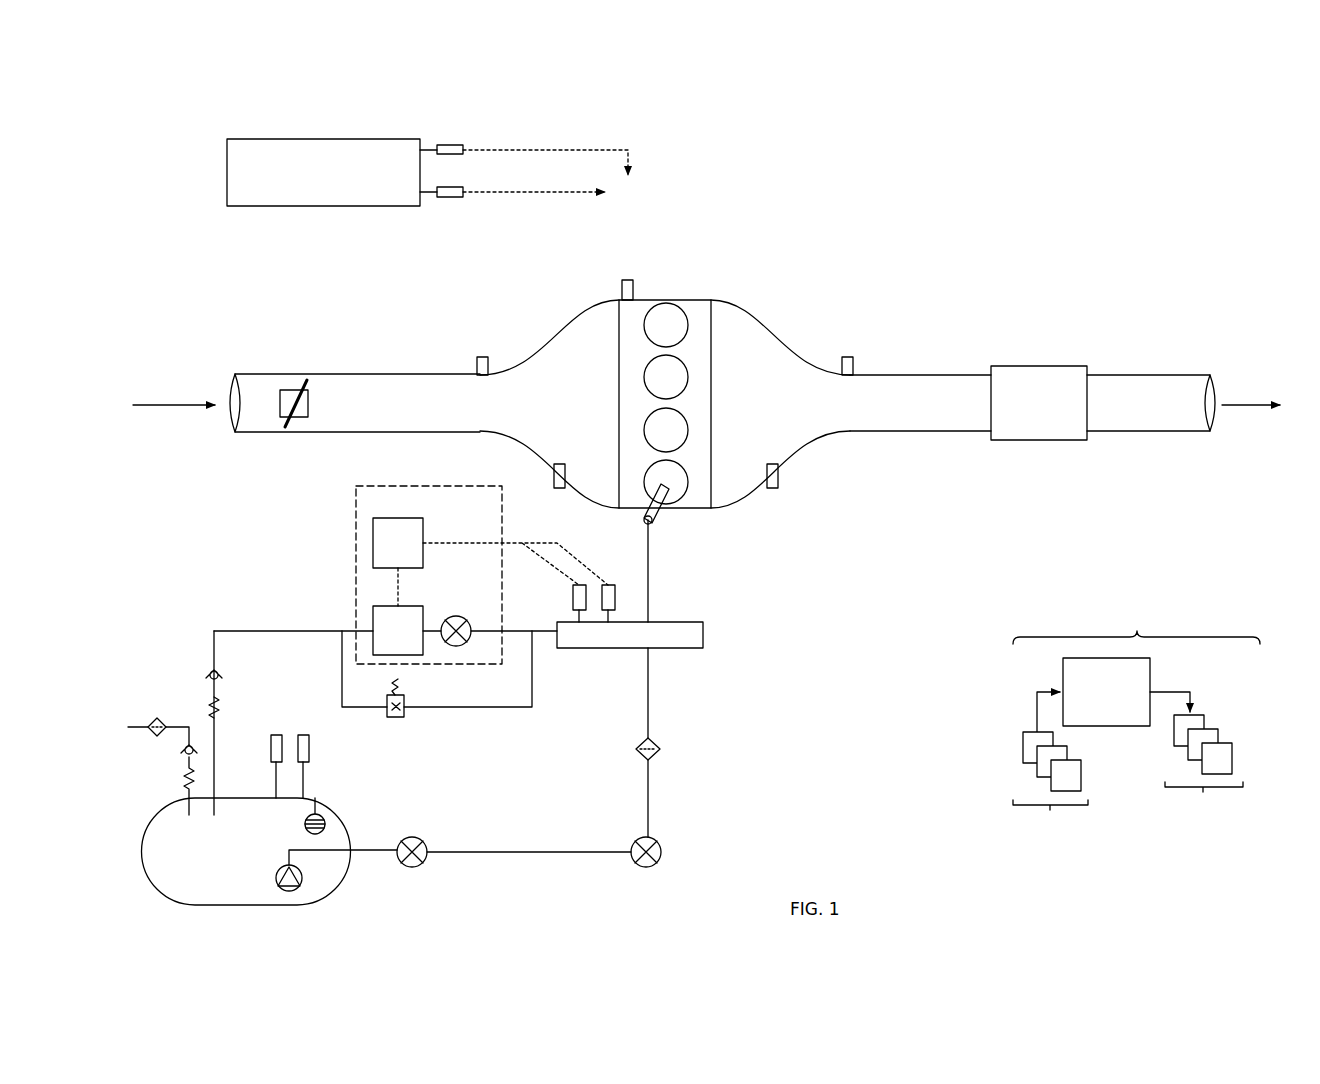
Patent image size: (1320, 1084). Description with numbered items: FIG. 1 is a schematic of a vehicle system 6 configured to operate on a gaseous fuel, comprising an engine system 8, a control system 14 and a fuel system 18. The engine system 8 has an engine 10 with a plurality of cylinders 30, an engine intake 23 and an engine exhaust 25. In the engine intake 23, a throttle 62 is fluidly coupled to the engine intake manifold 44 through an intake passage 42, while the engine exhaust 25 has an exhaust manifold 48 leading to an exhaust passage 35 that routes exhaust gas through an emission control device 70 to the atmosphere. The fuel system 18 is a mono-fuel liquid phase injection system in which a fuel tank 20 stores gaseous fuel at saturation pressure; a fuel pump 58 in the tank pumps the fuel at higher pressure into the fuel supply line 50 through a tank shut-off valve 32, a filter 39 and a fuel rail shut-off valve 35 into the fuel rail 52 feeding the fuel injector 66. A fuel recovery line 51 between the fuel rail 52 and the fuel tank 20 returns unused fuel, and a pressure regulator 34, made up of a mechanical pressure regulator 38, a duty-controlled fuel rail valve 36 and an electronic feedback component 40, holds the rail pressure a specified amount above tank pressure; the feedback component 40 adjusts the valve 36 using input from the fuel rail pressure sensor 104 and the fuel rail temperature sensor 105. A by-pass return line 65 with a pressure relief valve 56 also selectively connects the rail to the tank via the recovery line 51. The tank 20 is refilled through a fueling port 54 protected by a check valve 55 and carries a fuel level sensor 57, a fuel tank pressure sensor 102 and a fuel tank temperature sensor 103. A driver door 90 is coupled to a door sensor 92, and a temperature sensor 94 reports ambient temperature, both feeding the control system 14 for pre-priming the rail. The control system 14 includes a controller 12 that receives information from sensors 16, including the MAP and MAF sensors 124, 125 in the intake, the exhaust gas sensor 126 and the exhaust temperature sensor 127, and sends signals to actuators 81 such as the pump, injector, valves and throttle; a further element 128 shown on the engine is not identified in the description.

The vehicle system 6 is at (120, 148).
The engine system 8 is at (790, 288).
The engine 10 is at (712, 386).
The controller 12 is at (1106, 692).
The control system 14 is at (1136, 616).
The sensors 16 is at (1050, 772).
The fuel system 18 is at (162, 592).
The fuel tank 20 is at (318, 900).
The engine intake 23 is at (435, 362).
The engine exhaust 25 is at (1052, 318).
The cylinders 30 is at (686, 323).
The tank shut-off valve 32 is at (408, 840).
The pressure regulator 34 is at (412, 486).
The fuel rail shut-off valve 35 is at (1162, 375).
The fuel rail valve 36 is at (458, 618).
The mechanical pressure regulator 38 is at (398, 630).
The filter 39 is at (650, 740).
The electronic feedback component 40 is at (490, 562).
The intake passage 42 is at (350, 432).
The engine intake manifold 44 is at (549, 404).
The exhaust manifold 48 is at (780, 404).
The fuel supply line 50 is at (485, 852).
The fuel recovery line 51 is at (262, 631).
The fuel rail 52 is at (685, 622).
The fueling port 54 is at (152, 720).
The check valve 55 is at (176, 782).
The pressure relief valve 56 is at (390, 717).
The fuel level sensor 57 is at (318, 810).
The fuel pump 58 is at (300, 876).
The throttle 62 is at (307, 403).
The by-pass return line 65 is at (468, 707).
The fuel injector 66 is at (656, 515).
The emission control device 70 is at (1039, 403).
The actuators 81 is at (1200, 763).
The driver door 90 is at (323, 172).
The door sensor 92 is at (447, 197).
The temperature sensor 94 is at (448, 145).
The fuel tank pressure sensor 102 is at (273, 735).
The fuel tank temperature sensor 103 is at (305, 735).
The fuel rail pressure sensor 104 is at (612, 592).
The fuel rail temperature sensor 105 is at (573, 600).
The MAP sensor 124 is at (488, 368).
The MAF sensor 125 is at (554, 470).
The exhaust gas sensor 126 is at (778, 470).
The temperature sensor 127 is at (842, 364).
The engine sensor 128 is at (633, 292).